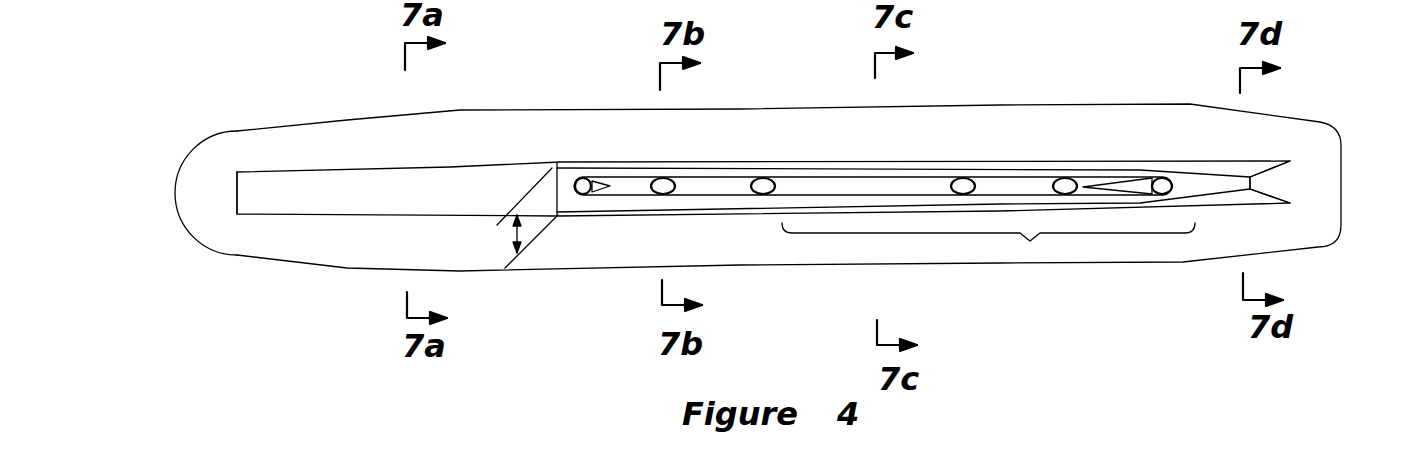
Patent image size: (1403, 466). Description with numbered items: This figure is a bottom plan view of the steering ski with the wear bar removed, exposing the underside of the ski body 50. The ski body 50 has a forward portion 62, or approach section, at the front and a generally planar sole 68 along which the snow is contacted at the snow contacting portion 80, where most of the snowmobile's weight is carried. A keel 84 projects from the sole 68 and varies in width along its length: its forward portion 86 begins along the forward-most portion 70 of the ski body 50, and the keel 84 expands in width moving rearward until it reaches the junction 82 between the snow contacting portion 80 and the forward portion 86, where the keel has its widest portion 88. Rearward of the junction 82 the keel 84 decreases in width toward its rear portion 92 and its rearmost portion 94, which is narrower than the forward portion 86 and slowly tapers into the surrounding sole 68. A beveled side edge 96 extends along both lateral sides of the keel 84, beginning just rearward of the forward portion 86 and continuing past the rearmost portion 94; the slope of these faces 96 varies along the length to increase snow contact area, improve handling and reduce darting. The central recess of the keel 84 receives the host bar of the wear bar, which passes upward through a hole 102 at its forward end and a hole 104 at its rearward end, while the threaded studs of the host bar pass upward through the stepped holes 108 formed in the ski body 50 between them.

The ski body 50 is at (813, 263).
The forward portion 62 is at (387, 276).
The sole 68 is at (743, 248).
The forward-most portion 70 is at (218, 163).
The snow contacting portion 80 is at (950, 263).
The junction 82 is at (548, 197).
The keel 84 is at (808, 173).
The forward portion of the keel 86 is at (287, 200).
The widest portion of the keel 88 is at (512, 225).
The rear portion of the keel 92 is at (1028, 245).
The rearmost portion of the keel 94 is at (1223, 187).
The beveled side edge 96 is at (708, 167).
The hole 102 is at (581, 177).
The hole 104 is at (1157, 178).
The holes 108 is at (650, 176).